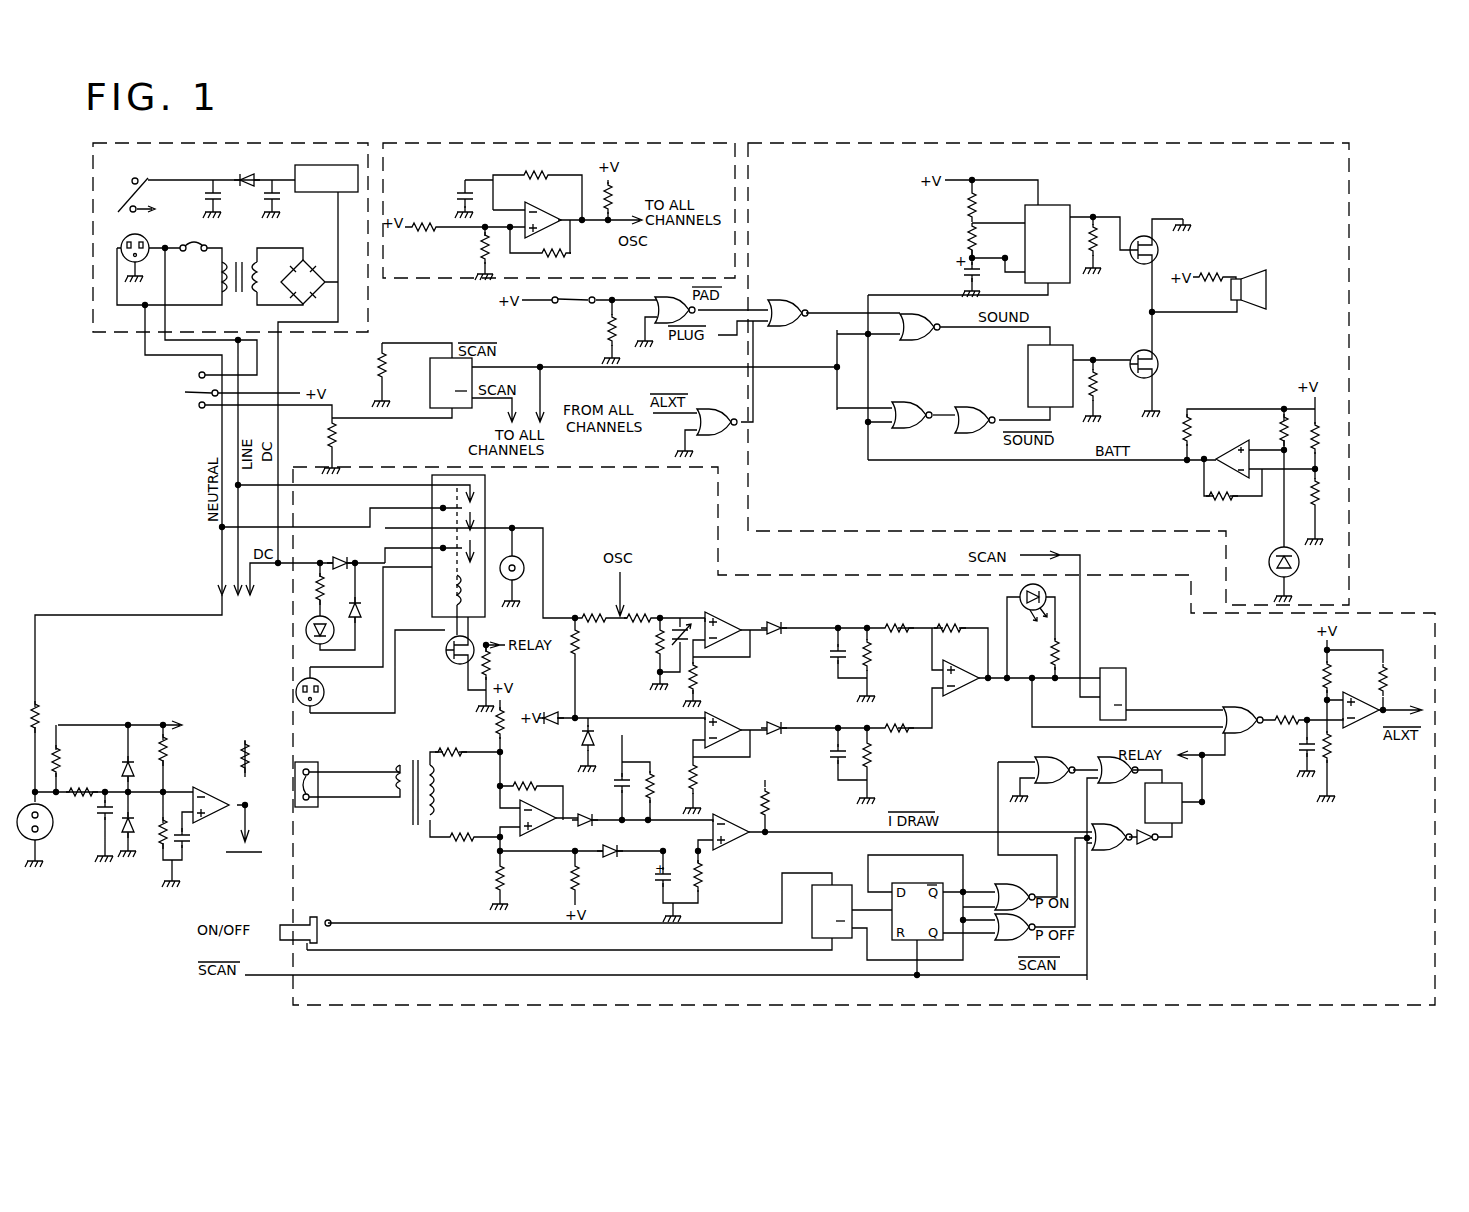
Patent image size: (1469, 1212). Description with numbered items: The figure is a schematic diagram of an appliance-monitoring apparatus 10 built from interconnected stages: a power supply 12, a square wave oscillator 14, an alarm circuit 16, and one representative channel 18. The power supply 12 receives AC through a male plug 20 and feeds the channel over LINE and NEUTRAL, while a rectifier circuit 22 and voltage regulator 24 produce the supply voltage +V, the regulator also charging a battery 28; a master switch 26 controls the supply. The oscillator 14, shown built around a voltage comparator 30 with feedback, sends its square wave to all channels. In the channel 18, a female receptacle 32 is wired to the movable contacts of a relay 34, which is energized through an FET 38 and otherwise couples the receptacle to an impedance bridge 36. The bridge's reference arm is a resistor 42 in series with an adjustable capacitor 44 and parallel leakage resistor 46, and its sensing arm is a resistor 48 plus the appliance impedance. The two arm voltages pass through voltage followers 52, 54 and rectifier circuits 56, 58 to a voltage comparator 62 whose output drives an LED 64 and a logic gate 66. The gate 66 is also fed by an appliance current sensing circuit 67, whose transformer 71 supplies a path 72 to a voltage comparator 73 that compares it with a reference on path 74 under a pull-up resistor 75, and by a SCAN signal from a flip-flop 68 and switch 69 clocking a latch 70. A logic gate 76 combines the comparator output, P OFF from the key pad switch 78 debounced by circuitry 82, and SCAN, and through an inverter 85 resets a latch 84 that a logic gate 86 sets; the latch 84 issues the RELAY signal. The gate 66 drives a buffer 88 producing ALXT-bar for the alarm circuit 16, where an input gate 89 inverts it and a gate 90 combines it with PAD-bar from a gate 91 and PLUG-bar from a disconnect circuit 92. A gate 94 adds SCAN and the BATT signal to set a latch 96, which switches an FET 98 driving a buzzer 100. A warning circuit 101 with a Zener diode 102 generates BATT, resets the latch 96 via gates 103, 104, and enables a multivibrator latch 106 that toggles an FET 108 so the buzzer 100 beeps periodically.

The apparatus 10 is at (128, 480).
The power supply 12 is at (93, 236).
The square wave oscillator 14 is at (443, 280).
The alarm circuit 16 is at (1349, 236).
The channel 18 is at (291, 668).
The male plug 20 is at (148, 238).
The rectifier circuit 22 is at (305, 258).
The voltage regulator 24 is at (318, 165).
The master switch 26 is at (146, 180).
The battery 28 is at (218, 190).
The voltage comparator 30 is at (540, 215).
The female receptacle 32 is at (324, 688).
The relay 34 is at (485, 498).
The impedance bridge 36 is at (606, 586).
The FET 38 is at (446, 650).
The resistor 42 is at (640, 612).
The adjustable capacitor 44 is at (680, 615).
The leakage resistor 46 is at (655, 650).
The resistor 48 is at (575, 618).
The voltage follower 52 is at (728, 620).
The voltage follower 54 is at (728, 716).
The rectifier circuit 56 is at (850, 626).
The rectifier circuit 58 is at (848, 726).
The voltage comparator 62 is at (966, 692).
The LED 64 is at (1020, 593).
The logic gate 66 is at (1245, 707).
The appliance current sensing circuit 67 is at (410, 858).
The flip-flop 68 is at (430, 384).
The switch 69 is at (185, 392).
The latch 70 is at (1110, 668).
The transformer 71 is at (405, 760).
The path 72 is at (568, 814).
The voltage comparator 73 is at (745, 822).
The path 74 is at (510, 858).
The pull-up resistor 75 is at (775, 790).
The logic gate 76 is at (1110, 850).
The switch 78 is at (305, 915).
The debounce circuitry 82 is at (790, 908).
The latch 84 is at (1175, 823).
The inverter 85 is at (1150, 845).
The logic gate 86 is at (1038, 764).
The buffer 88 is at (1362, 696).
The input gate 89 is at (718, 410).
The gate 90 is at (788, 300).
The gate 91 is at (672, 297).
The disconnect circuit 92 is at (164, 704).
The gate 94 is at (932, 316).
The latch 96 is at (1060, 345).
The FET 98 is at (1137, 355).
The buzzer 100 is at (1255, 279).
The warning circuit 101 is at (1266, 385).
The Zener diode 102 is at (1270, 552).
The gate 103 is at (905, 402).
The gate 104 is at (970, 407).
The latch 106 is at (1065, 205).
The FET 108 is at (1135, 262).